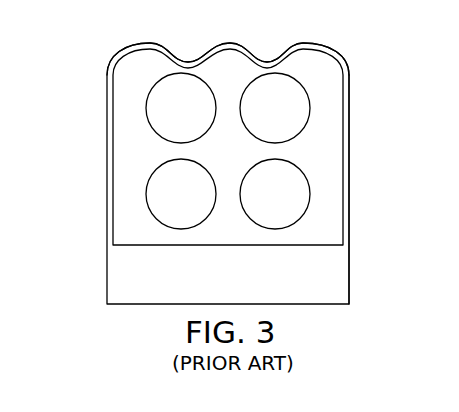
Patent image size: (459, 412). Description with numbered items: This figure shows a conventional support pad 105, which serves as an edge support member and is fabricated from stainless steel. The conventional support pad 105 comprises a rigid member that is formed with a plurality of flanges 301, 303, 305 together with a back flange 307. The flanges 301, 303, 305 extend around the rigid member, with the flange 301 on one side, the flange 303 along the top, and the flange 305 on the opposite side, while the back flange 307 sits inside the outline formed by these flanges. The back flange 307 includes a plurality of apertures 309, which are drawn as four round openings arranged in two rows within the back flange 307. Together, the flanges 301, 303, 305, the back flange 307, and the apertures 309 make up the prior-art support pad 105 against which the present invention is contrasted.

The conventional support pad 105 is at (231, 207).
The flange 301 is at (107, 116).
The flange 303 is at (188, 60).
The flange 305 is at (349, 107).
The back flange 307 is at (245, 67).
The apertures 309 is at (289, 77).